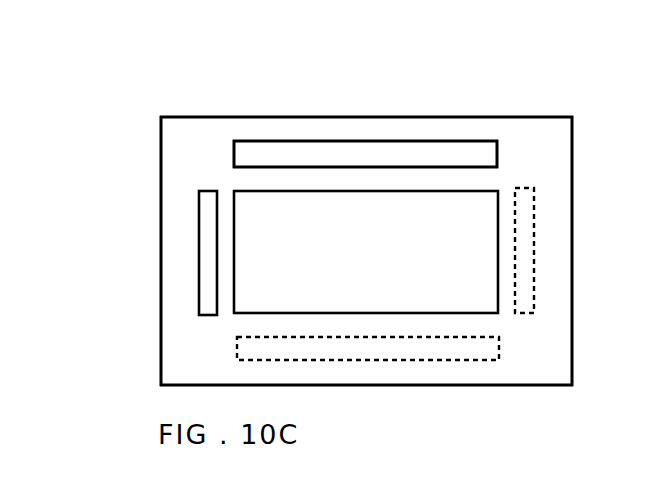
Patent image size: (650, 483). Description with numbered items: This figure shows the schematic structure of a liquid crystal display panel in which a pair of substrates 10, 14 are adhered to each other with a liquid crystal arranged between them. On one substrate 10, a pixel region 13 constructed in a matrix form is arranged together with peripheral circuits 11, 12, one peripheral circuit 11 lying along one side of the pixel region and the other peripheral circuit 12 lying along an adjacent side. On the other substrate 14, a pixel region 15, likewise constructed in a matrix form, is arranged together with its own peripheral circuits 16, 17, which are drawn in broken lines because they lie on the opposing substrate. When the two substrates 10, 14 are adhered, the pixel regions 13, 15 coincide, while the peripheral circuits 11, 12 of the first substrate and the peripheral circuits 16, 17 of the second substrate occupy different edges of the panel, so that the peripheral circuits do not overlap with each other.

The substrate 10 is at (313, 196).
The substrate 14 is at (366, 251).
The peripheral circuit 11 is at (366, 170).
The peripheral circuit 12 is at (139, 198).
The pixel region 13 is at (365, 123).
The pixel region 15 is at (365, 154).
The peripheral circuit 16 is at (561, 170).
The peripheral circuit 17 is at (401, 391).